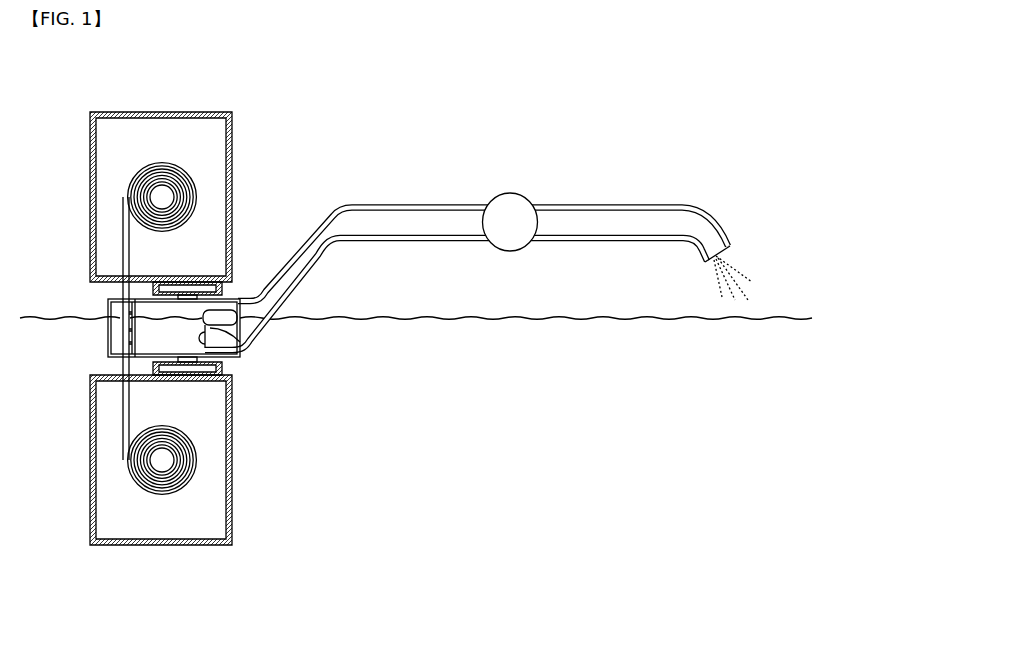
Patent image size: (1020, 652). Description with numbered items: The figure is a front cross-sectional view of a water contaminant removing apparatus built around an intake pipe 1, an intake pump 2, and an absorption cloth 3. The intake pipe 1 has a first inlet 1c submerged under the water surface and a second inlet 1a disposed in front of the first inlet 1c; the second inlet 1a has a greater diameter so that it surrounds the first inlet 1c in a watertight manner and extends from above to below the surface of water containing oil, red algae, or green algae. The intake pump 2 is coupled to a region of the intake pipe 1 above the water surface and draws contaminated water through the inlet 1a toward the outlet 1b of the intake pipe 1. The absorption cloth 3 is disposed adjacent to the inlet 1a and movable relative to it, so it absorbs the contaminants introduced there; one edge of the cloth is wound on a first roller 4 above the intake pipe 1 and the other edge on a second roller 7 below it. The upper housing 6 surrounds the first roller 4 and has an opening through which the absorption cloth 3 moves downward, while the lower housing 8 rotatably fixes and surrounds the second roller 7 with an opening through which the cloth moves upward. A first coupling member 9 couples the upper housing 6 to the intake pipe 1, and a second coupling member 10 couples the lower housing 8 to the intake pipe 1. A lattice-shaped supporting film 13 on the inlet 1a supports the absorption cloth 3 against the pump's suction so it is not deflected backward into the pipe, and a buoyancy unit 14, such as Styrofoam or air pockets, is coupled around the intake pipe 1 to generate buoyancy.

The intake pipe 1 is at (428, 203).
The second inlet 1a is at (110, 357).
The outlet 1b is at (728, 248).
The first inlet 1c is at (246, 352).
The intake pump 2 is at (513, 191).
The absorption cloth 3 is at (123, 236).
The first roller 4 is at (170, 197).
The upper housing 6 is at (163, 112).
The second roller 7 is at (162, 460).
The lower housing 8 is at (158, 548).
The first coupling member 9 is at (222, 290).
The second coupling member 10 is at (224, 368).
The lattice-shaped supporting film 13 is at (180, 378).
The buoyancy unit 14 is at (273, 334).